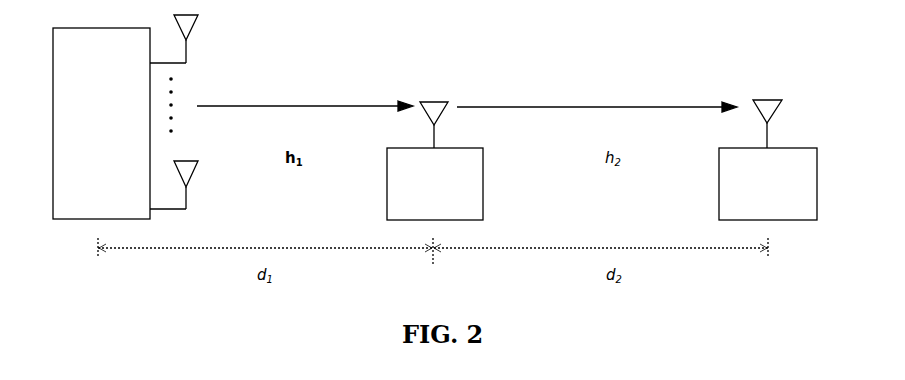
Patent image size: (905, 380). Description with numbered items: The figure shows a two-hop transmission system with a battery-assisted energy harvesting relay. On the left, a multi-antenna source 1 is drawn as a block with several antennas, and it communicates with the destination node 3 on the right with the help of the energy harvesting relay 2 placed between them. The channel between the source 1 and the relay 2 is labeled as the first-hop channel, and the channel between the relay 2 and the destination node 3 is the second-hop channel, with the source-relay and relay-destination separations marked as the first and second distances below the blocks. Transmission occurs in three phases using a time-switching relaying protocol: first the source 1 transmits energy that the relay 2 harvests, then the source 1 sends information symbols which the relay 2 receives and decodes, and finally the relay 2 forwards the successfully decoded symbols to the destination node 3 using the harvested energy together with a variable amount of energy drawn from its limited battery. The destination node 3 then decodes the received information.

The source 1 is at (125, 117).
The relay 2 is at (435, 161).
The destination node 3 is at (768, 160).